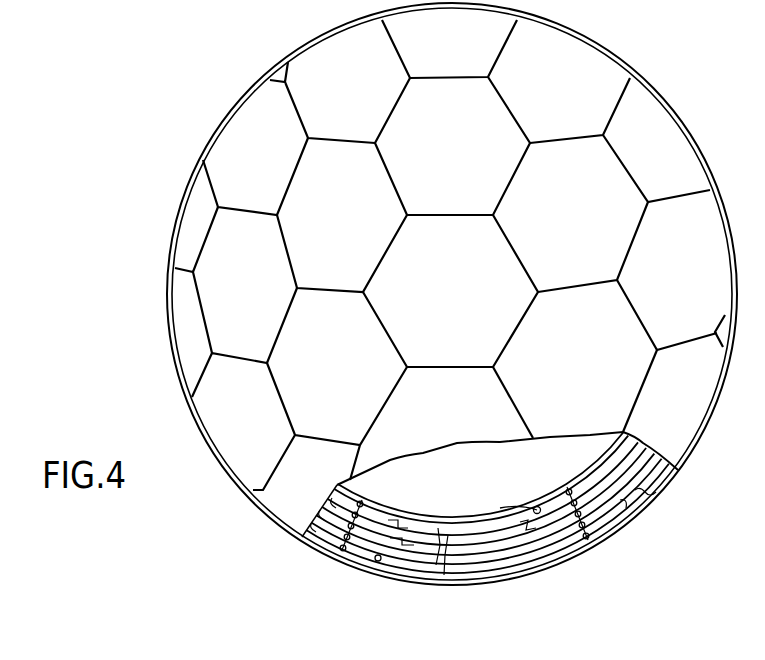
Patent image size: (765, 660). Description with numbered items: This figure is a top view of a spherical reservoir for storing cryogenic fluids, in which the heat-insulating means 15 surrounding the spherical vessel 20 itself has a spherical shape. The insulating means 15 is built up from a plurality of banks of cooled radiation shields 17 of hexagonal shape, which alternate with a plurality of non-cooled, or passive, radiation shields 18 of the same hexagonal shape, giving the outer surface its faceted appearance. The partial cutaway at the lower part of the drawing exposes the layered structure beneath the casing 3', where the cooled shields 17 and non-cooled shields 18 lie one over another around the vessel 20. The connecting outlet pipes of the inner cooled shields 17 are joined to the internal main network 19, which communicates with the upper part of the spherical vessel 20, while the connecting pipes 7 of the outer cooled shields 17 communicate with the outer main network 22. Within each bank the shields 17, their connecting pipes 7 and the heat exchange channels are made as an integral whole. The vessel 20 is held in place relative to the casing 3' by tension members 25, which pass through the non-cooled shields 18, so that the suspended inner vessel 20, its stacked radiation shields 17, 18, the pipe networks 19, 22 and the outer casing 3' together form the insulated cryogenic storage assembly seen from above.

The casing 3' is at (452, 294).
The connecting pipes 7 is at (420, 520).
The heat-insulating means 15 is at (562, 548).
The cooled radiation shields 17 is at (453, 553).
The non-cooled radiation shields 18 is at (332, 498).
The internal main network 19 is at (537, 506).
The spherical vessel 20 is at (593, 463).
The outer main network 22 is at (372, 567).
The tension members 25 is at (362, 500).